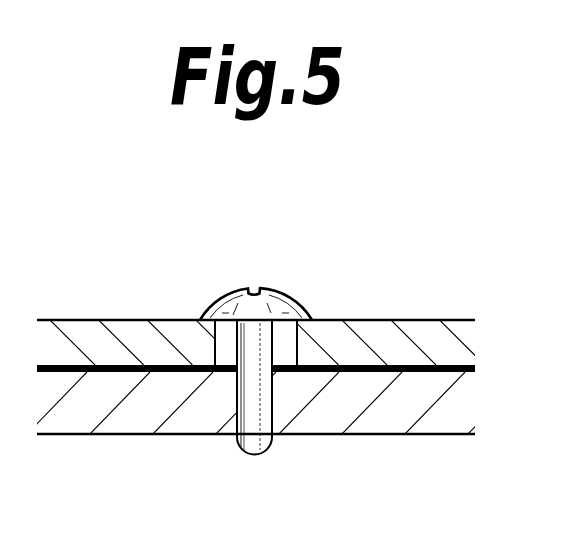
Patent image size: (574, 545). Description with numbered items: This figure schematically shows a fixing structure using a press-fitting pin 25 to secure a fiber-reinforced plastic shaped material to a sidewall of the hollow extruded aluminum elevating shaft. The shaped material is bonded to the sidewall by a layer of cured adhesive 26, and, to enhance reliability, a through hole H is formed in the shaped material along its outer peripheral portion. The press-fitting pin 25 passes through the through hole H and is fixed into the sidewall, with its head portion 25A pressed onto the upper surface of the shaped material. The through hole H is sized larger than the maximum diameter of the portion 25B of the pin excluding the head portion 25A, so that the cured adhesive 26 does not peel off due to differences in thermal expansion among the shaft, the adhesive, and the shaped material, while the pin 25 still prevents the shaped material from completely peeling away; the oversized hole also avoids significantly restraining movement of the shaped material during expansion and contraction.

The press-fitting pin 25 is at (261, 370).
The head portion 25A is at (217, 296).
The portion of the press-fitting pin excluding the head portion 25B is at (255, 365).
The through hole H is at (314, 318).
The cured adhesive 26 is at (450, 376).